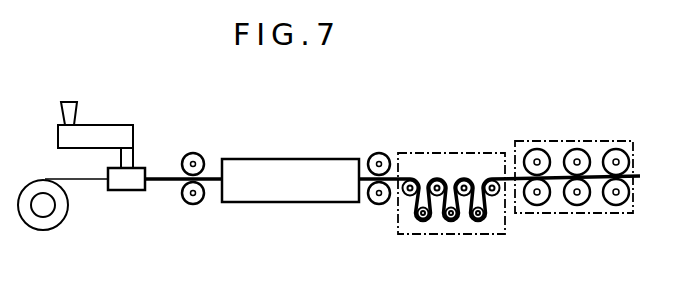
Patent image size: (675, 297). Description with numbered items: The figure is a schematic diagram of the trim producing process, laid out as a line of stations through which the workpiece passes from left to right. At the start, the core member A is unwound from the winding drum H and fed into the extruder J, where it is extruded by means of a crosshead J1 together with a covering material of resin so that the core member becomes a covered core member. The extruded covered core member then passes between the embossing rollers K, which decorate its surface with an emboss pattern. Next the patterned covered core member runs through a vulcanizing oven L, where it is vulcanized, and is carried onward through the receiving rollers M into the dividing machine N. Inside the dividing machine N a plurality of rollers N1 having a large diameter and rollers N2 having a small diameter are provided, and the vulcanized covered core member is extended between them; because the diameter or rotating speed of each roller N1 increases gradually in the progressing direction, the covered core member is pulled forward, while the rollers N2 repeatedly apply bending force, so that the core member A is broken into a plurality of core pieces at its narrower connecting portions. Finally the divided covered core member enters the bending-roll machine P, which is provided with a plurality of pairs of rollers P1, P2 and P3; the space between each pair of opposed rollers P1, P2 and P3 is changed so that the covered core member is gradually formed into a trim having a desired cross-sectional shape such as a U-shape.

The winding drum H is at (53, 214).
The core member A is at (87, 180).
The extruder J is at (133, 128).
The crosshead J1 is at (132, 181).
The embossing rollers K is at (203, 152).
The drying chamber L is at (291, 158).
The receiving rollers M is at (380, 152).
The dividing machine N is at (442, 152).
The rollers having large diameter N1 is at (407, 197).
The rollers having small diameter N2 is at (430, 220).
The bending-roll machine P is at (567, 140).
The pair of rollers P1 is at (537, 198).
The pair of rollers P2 is at (577, 198).
The pair of rollers P3 is at (618, 198).